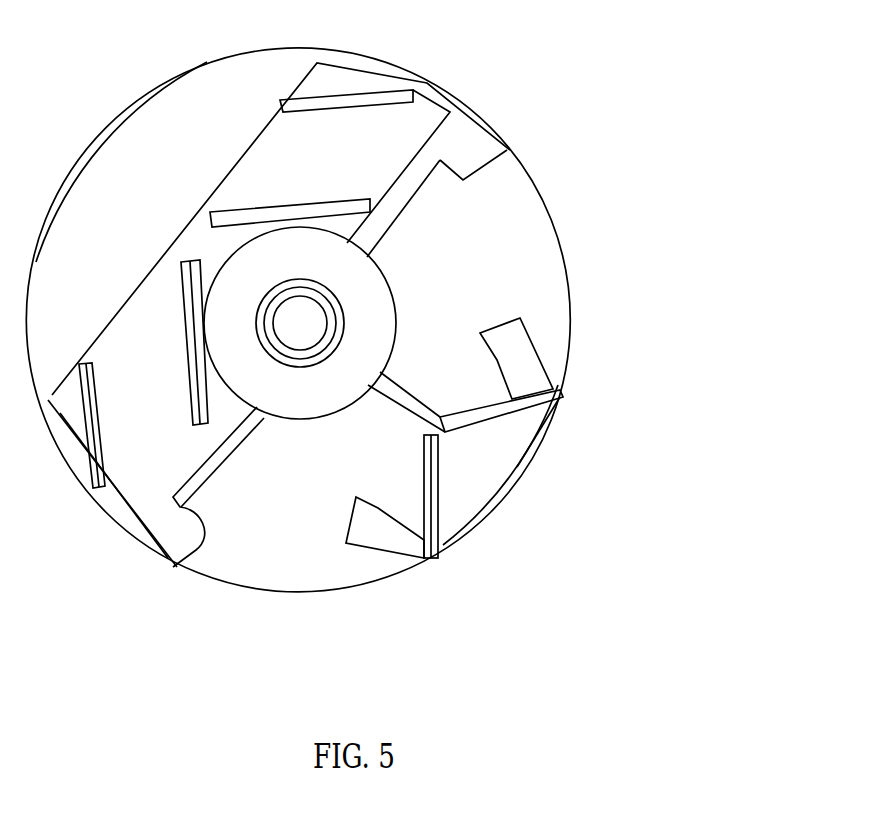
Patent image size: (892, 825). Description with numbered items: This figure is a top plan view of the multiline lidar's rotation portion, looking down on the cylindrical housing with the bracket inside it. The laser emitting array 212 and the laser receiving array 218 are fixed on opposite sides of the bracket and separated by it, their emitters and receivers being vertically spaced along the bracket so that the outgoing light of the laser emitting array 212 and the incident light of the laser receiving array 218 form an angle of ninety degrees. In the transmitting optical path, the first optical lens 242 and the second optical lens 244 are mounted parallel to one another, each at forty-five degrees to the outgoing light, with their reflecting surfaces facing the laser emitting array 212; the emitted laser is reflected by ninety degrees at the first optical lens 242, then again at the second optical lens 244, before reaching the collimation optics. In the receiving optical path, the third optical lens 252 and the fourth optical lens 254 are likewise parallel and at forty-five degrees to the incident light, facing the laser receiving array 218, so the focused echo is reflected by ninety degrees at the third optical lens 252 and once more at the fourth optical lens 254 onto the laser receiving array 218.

The first optical lens 242 is at (415, 88).
The second optical lens 244 is at (365, 203).
The third optical lens 252 is at (205, 347).
The fourth optical lens 254 is at (94, 473).
The laser emitting array 212 is at (547, 344).
The laser receiving array 218 is at (389, 521).